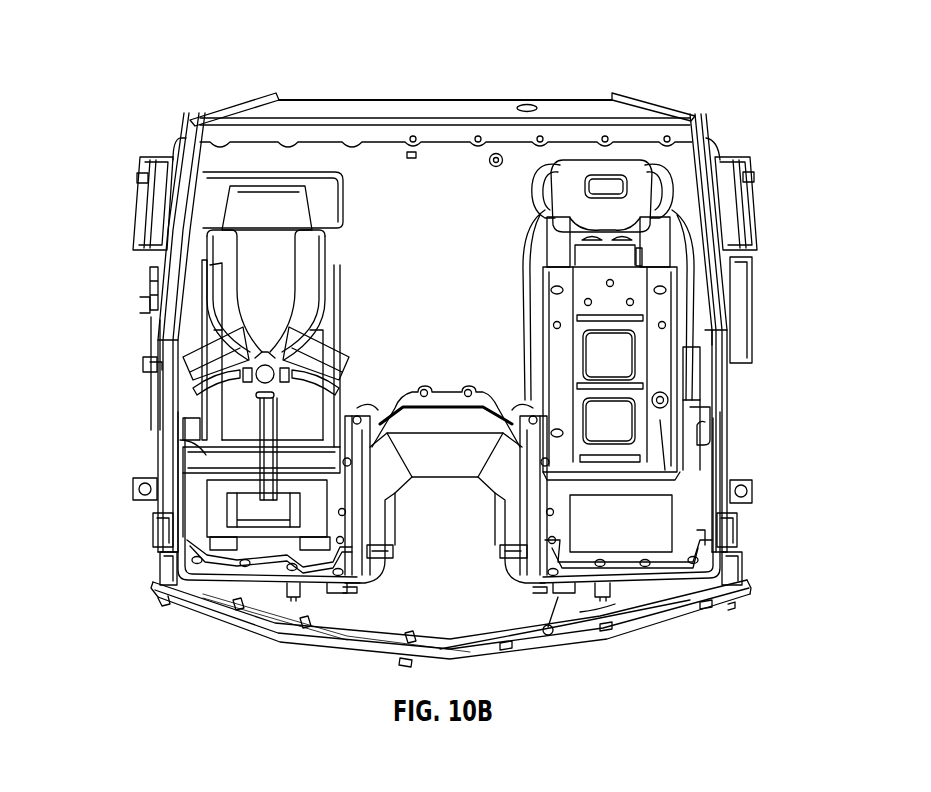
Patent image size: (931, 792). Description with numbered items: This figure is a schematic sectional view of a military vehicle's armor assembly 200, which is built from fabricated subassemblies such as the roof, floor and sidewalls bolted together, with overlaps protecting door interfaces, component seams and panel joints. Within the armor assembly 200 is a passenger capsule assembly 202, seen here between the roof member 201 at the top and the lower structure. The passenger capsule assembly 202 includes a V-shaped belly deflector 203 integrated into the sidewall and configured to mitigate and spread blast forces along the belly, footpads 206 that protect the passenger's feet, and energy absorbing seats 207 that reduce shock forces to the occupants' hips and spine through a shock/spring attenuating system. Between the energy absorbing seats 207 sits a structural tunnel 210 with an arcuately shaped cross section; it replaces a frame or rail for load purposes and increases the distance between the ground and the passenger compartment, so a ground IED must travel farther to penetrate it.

The armor assembly 200 is at (193, 80).
The roof member 201 is at (567, 108).
The passenger capsule assembly 202 is at (712, 128).
The V-shaped belly deflector 203 is at (547, 650).
The footpads 206 is at (667, 510).
The energy absorbing seats 207 is at (200, 308).
The structural tunnel 210 is at (435, 467).